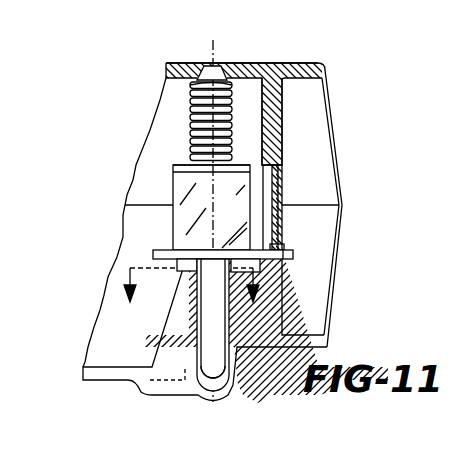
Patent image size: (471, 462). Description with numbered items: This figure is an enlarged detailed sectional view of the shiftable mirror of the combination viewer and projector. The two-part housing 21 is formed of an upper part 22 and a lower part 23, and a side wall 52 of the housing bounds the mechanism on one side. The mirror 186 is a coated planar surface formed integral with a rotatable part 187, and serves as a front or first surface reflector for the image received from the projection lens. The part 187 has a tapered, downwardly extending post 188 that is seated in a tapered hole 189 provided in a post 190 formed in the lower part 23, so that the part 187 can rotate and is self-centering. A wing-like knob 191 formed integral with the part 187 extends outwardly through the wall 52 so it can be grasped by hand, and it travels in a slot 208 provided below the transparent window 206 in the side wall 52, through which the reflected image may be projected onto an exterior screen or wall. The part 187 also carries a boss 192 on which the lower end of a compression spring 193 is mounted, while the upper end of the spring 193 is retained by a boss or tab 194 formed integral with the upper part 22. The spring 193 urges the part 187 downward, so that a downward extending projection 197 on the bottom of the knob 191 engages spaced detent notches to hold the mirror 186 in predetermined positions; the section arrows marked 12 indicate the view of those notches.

The housing 21 is at (150, 62).
The upper part 22 is at (335, 107).
The lower part 23 is at (338, 310).
The side wall 52 is at (282, 137).
The mirror 186 is at (186, 223).
The part 187 is at (166, 187).
The post 188 is at (229, 360).
The tapered hole 189 is at (207, 322).
The post 190 is at (88, 380).
The wing-like knob 191 is at (293, 256).
The boss 192 is at (196, 148).
The compression spring 193 is at (190, 103).
The boss or tab 194 is at (214, 70).
The projection 197 is at (186, 280).
The transparent window 206 is at (283, 182).
The slot 208 is at (283, 250).
The section line of FIG. 12 is at (197, 300).